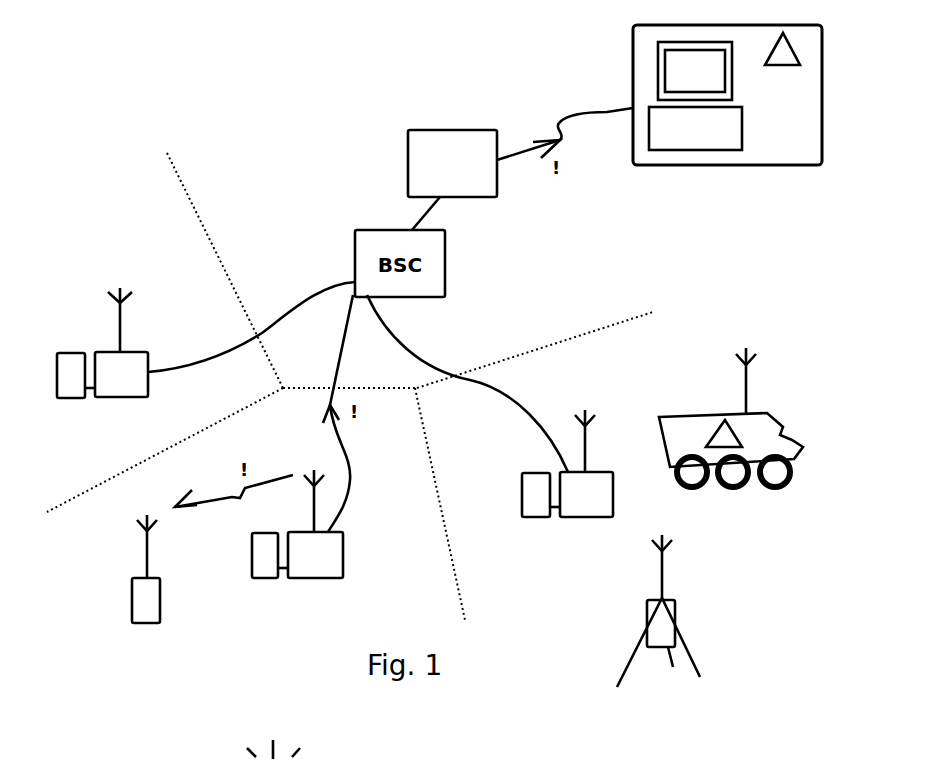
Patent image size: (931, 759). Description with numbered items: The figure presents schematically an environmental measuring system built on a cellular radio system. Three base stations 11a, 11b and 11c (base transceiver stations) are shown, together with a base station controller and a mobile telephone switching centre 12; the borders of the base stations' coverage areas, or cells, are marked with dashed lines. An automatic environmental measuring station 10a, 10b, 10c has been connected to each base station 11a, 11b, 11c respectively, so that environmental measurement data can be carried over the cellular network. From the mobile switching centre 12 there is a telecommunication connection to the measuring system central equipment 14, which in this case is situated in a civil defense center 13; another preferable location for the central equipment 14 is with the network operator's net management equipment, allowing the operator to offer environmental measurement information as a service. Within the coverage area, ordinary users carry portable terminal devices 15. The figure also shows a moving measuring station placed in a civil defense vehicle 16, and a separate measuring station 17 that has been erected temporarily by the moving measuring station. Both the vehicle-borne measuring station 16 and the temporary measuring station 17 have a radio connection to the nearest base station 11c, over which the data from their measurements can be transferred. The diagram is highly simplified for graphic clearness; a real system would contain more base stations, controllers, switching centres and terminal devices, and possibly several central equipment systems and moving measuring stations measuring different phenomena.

The automatic environmental measuring station 10a is at (66, 398).
The automatic environmental measuring station 10b is at (268, 578).
The automatic environmental measuring station 10c is at (532, 517).
The base station 11a is at (118, 397).
The base station 11b is at (325, 578).
The base station 11c is at (590, 517).
The mobile telephone switching centre 12 is at (428, 130).
The civil defense center 13 is at (822, 165).
The measuring system central equipment 14 is at (742, 136).
The portable terminal device 15 is at (137, 623).
The civil defense vehicle 16 is at (783, 424).
The separate measuring station 17 is at (675, 603).